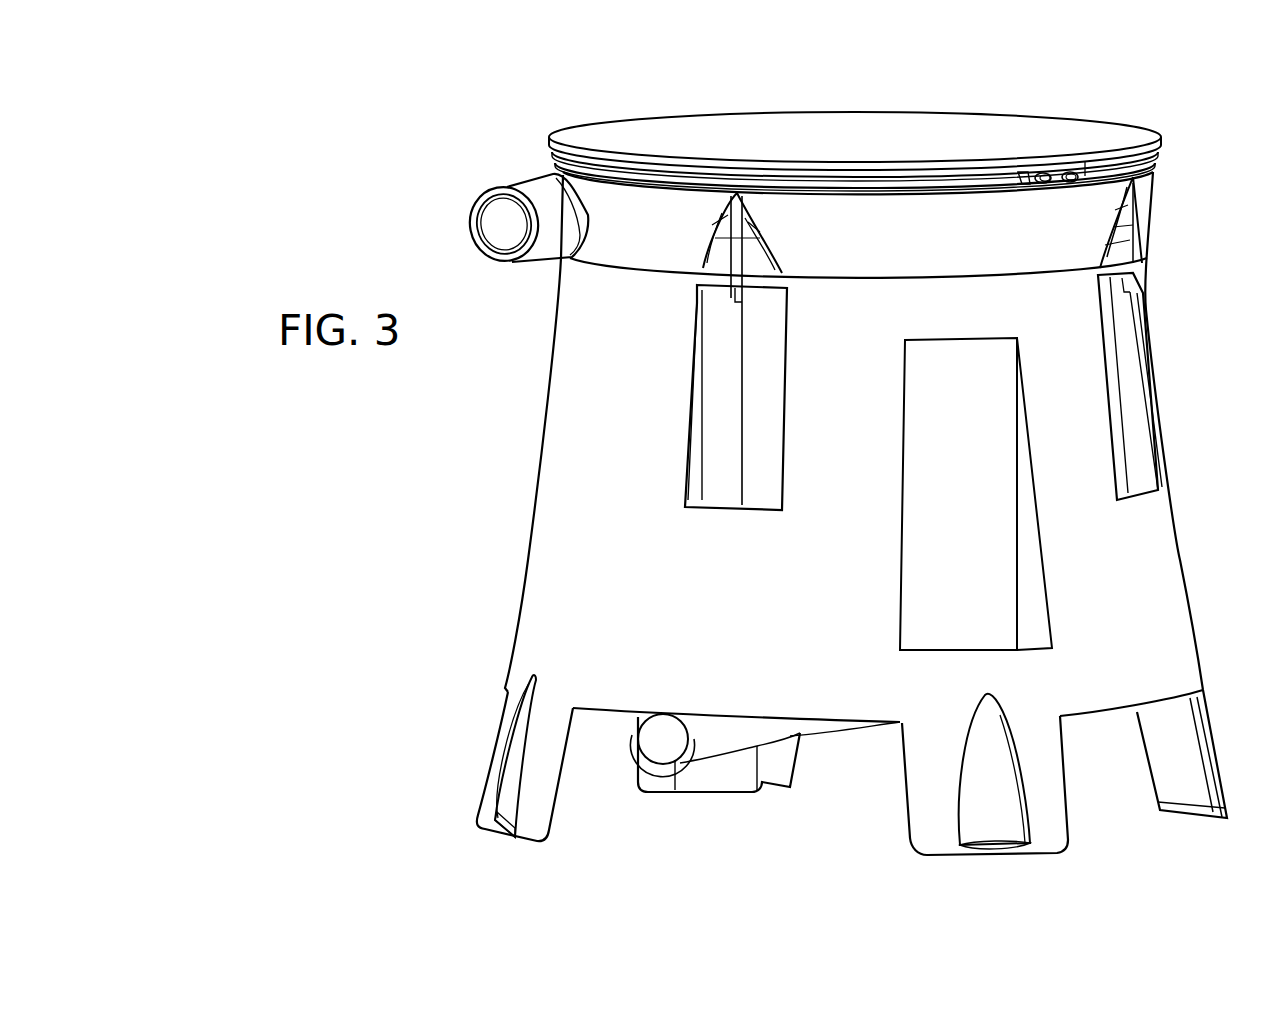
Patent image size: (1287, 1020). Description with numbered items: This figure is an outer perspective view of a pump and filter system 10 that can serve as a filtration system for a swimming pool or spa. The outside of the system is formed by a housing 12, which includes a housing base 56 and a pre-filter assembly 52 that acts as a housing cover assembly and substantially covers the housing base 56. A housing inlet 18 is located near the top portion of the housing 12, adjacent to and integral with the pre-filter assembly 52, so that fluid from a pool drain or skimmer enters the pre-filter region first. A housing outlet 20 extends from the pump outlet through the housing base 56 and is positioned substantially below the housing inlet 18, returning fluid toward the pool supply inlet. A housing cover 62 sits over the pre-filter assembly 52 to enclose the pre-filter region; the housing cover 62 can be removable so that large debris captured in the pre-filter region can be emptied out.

The pump and filter system 10 is at (532, 100).
The housing 12 is at (1146, 315).
The housing inlet 18 is at (541, 193).
The housing outlet 20 is at (712, 745).
The pre-filter assembly 52 is at (1105, 152).
The housing base 56 is at (1170, 606).
The housing cover 62 is at (900, 125).